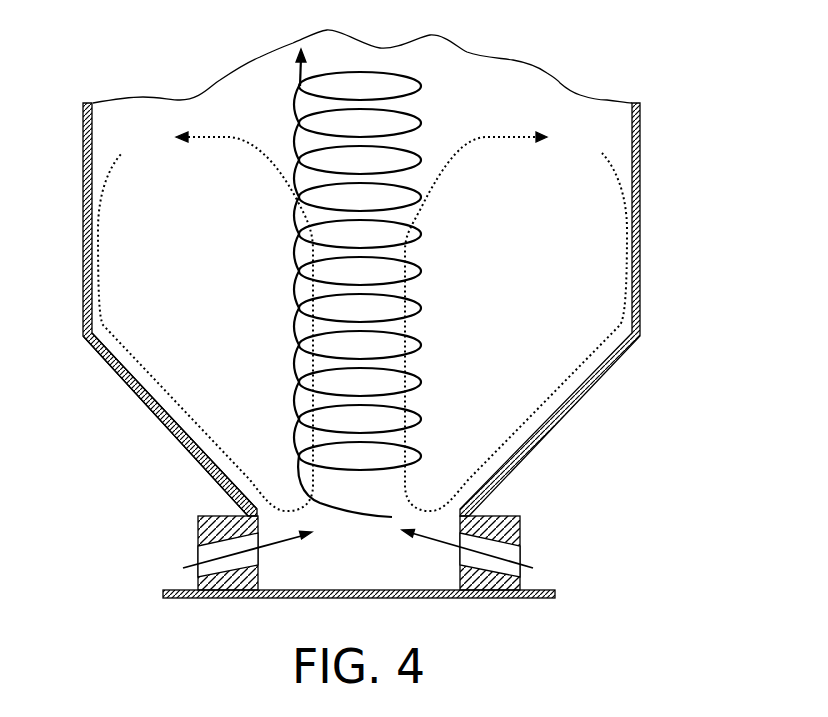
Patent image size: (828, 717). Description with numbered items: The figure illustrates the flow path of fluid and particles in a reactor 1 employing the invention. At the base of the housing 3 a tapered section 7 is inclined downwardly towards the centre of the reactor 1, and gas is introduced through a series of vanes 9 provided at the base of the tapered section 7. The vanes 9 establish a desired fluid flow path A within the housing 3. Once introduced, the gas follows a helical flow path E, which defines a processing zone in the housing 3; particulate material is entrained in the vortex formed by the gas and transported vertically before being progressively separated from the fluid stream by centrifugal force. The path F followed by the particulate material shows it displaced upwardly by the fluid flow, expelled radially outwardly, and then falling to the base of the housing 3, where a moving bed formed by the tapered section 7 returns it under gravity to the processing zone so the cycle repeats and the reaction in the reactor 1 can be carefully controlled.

The reactor 1 is at (359, 314).
The housing 3 is at (83, 224).
The tapered section 7 is at (149, 406).
The vanes 9 is at (199, 555).
The helical flow path E is at (302, 57).
The path followed by the particulate material F is at (245, 148).
The fluid flow path A is at (287, 544).